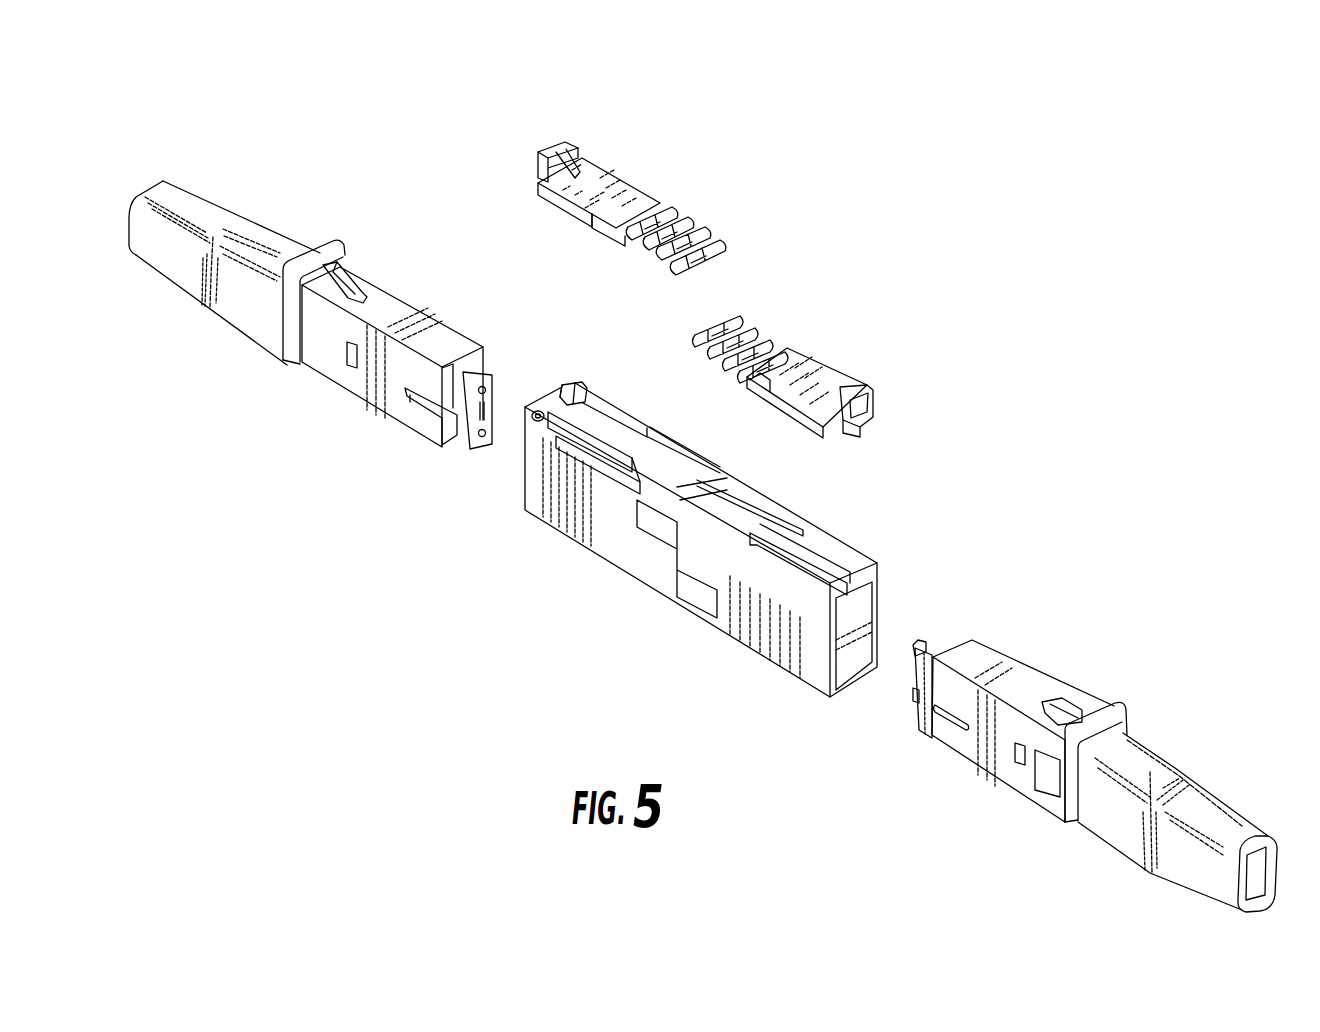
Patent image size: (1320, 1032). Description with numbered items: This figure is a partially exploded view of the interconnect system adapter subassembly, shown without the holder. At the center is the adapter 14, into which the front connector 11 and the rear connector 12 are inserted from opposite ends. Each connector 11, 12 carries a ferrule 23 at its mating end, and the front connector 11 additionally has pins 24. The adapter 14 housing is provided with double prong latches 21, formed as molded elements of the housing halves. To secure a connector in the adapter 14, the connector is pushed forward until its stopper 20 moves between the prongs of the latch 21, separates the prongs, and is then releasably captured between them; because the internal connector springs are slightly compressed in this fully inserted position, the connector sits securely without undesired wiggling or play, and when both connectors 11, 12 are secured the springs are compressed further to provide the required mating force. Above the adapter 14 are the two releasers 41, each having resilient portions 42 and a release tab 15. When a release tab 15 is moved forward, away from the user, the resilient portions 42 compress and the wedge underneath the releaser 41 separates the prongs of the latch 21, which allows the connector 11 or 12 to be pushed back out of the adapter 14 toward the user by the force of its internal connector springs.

The front connector 11 is at (1124, 834).
The rear connector 12 is at (221, 306).
The adapter 14 is at (612, 540).
The release tab 15 is at (565, 143).
The stopper 20 is at (365, 295).
The latch 21 is at (563, 443).
The ferrule 23 is at (482, 372).
The pins 24 is at (914, 642).
The releaser 41 is at (600, 190).
The resilient portions 42 is at (718, 241).